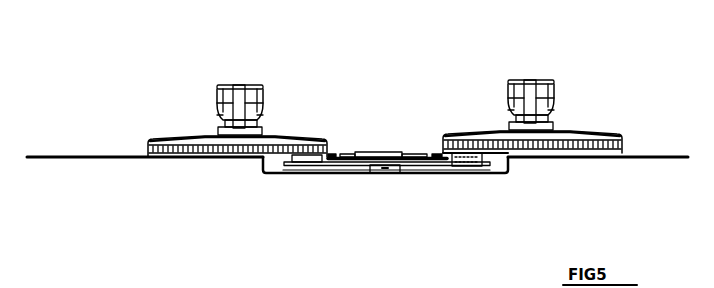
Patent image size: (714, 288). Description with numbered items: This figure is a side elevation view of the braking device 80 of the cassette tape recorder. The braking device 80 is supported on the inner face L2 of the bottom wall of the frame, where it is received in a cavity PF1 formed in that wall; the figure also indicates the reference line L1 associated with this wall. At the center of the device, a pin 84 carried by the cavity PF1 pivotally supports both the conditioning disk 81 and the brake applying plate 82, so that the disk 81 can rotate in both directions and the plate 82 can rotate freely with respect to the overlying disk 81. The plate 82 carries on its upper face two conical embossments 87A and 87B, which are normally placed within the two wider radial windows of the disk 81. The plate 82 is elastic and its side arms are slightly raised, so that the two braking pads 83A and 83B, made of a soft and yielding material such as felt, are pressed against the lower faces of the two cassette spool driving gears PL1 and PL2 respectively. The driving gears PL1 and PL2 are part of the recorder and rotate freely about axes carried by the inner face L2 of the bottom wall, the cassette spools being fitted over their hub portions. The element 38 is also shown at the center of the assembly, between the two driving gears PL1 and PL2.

The reference plane / base line L1 is at (48, 160).
The inner face L2 is at (71, 157).
The cassette spool driving gear PL1 is at (241, 70).
The cassette spool driving gear PL2 is at (533, 72).
The braking pad 83A is at (307, 157).
The braking pad 83B is at (455, 153).
The conical embossment 87A is at (336, 154).
The conical embossment 87B is at (437, 154).
The conditioning disk 81 is at (347, 154).
The braking device 80 is at (390, 145).
The raised plate 38 is at (375, 152).
The brake applying plate 82 is at (320, 165).
The pin 84 is at (385, 175).
The cavity PF1 is at (283, 166).